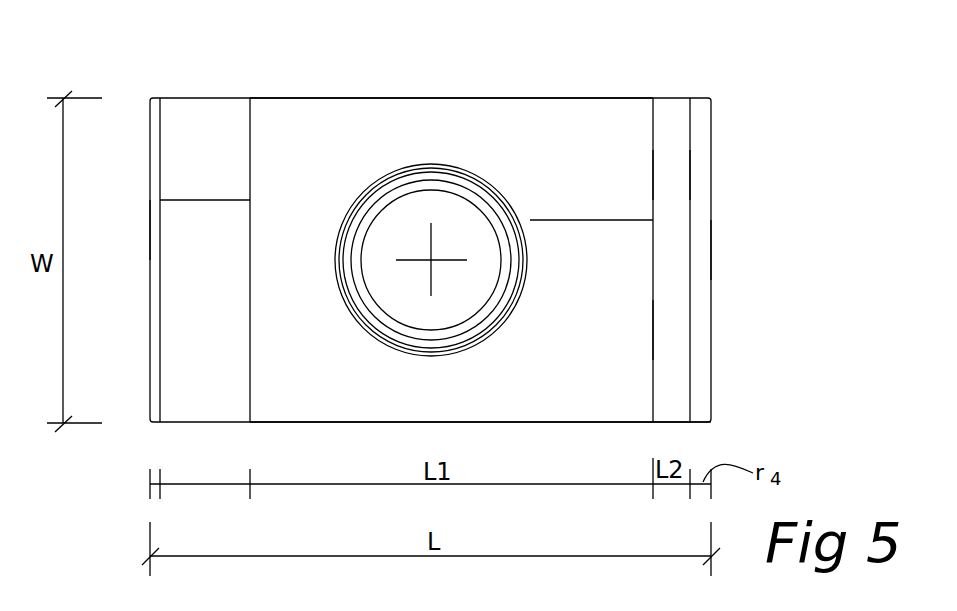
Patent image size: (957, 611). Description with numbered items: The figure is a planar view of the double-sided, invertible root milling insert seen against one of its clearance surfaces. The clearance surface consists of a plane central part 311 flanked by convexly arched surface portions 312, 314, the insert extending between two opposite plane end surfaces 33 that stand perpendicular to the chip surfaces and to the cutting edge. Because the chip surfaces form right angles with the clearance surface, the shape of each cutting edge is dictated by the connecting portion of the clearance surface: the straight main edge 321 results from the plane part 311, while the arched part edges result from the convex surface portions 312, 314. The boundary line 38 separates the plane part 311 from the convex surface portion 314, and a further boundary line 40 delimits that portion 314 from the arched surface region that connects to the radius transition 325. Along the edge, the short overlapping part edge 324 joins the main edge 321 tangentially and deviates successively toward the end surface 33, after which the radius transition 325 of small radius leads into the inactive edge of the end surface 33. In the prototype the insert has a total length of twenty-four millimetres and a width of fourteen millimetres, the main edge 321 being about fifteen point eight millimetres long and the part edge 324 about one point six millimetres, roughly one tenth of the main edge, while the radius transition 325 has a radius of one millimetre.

The end surface 33 is at (712, 250).
The boundary line 38 is at (653, 180).
The boundary line 40 is at (690, 178).
The plane part of the clearance surface 311 is at (622, 259).
The convex surface portion 312 is at (232, 277).
The convex surface portion 314 is at (668, 328).
The main edge 321 is at (465, 98).
The part edge 324 is at (665, 421).
The radius transition 325 is at (700, 421).